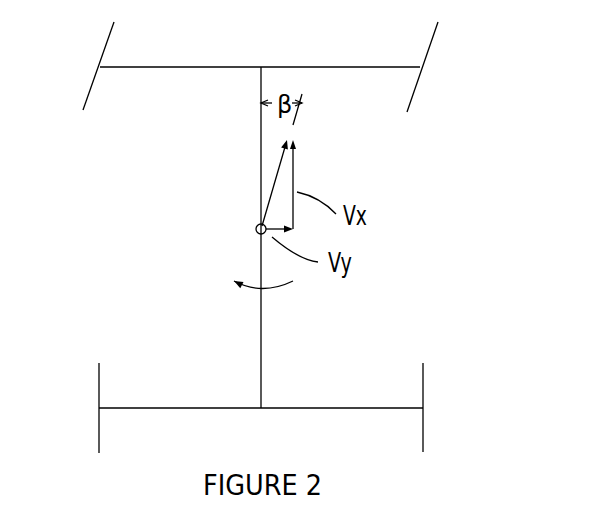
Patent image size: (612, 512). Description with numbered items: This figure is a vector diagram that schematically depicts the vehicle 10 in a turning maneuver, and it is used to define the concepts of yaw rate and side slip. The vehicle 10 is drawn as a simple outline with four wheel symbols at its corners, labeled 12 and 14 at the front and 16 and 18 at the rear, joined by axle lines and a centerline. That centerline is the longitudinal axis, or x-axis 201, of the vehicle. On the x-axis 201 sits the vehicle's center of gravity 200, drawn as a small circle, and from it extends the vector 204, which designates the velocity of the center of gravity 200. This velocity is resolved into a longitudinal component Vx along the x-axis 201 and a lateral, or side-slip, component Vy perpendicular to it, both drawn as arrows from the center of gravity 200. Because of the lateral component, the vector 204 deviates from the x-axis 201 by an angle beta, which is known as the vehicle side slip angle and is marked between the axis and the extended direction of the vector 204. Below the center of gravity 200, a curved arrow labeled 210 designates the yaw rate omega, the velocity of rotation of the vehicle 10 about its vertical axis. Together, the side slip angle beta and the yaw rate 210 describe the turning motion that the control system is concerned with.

The vehicle 10 is at (505, 164).
The front left wheel 12 is at (98, 35).
The front right wheel 14 is at (422, 97).
The rear left wheel 16 is at (99, 378).
The rear right wheel 18 is at (423, 438).
The center of gravity 200 is at (255, 222).
The x-axis 201 is at (263, 364).
The vector 204 is at (275, 170).
The yaw rate 210 is at (247, 290).